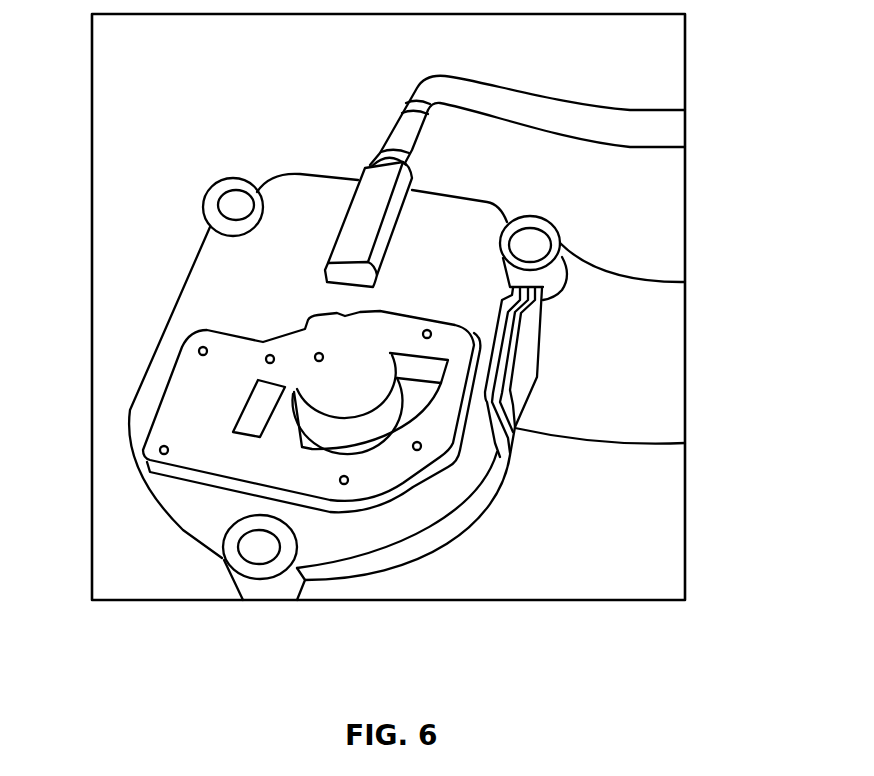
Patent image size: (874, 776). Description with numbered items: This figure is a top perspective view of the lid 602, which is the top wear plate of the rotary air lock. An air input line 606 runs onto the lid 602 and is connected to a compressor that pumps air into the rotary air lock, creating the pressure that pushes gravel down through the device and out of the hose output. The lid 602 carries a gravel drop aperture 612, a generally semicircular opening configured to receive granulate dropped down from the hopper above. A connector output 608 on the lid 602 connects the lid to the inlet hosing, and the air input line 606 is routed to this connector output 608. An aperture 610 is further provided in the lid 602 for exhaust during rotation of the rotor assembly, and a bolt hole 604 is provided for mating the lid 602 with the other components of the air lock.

The lid 602 is at (270, 283).
The bolt hole 604 is at (543, 243).
The air input line 606 is at (660, 127).
The connector output 608 is at (377, 190).
The aperture 610 is at (253, 401).
The gravel drop aperture 612 is at (377, 403).